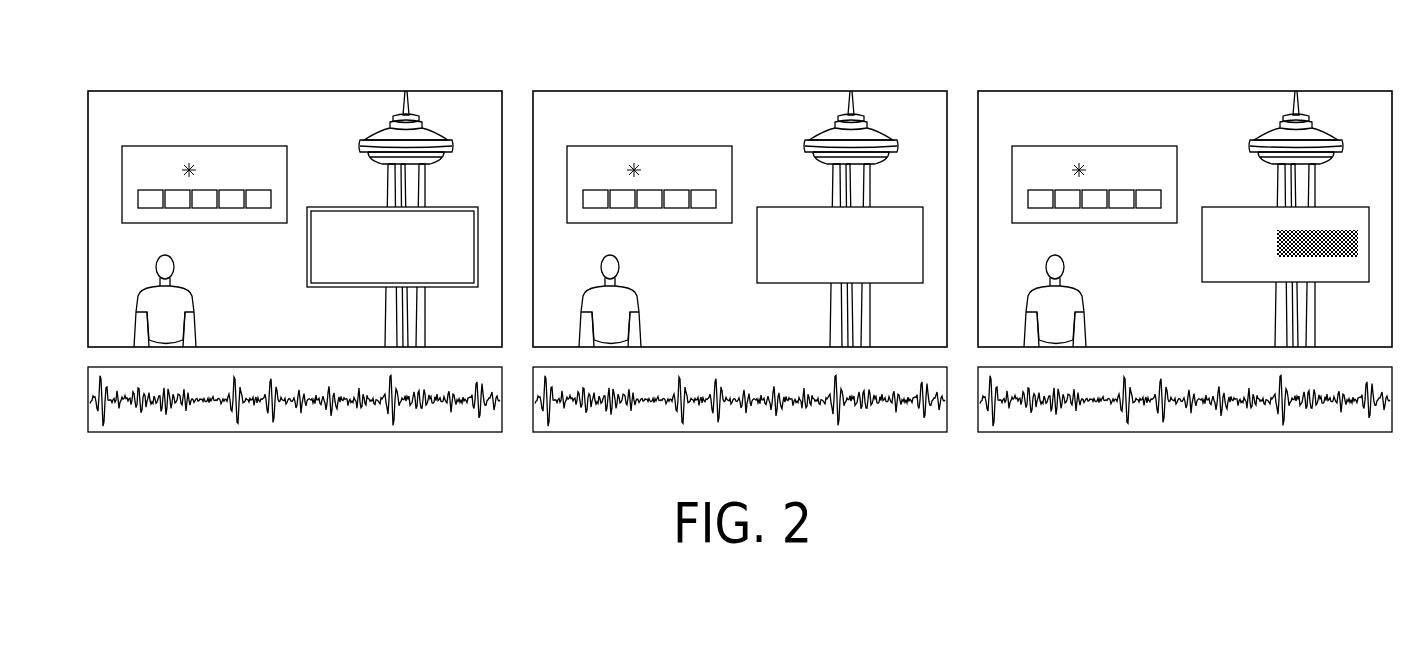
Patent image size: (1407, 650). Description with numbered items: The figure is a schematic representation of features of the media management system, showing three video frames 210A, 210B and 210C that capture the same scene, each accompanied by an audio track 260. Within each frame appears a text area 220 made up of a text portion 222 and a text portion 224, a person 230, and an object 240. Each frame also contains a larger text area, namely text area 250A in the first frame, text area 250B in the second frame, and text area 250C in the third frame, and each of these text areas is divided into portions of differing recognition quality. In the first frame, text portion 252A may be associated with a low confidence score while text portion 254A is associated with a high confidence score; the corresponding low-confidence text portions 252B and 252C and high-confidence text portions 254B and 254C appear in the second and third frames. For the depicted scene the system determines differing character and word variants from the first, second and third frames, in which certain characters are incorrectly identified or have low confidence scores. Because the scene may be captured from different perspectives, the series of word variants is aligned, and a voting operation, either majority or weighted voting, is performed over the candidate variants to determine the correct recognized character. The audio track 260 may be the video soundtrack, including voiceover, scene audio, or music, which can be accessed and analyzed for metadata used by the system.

The frame 210A is at (125, 90).
The frame 210B is at (590, 90).
The frame 210C is at (1025, 90).
The text area 220 is at (288, 176).
The text portion 222 is at (136, 168).
The text portion 224 is at (128, 203).
The person 230 is at (177, 262).
The object 240 is at (410, 105).
The text area 250A is at (359, 260).
The text area 250B is at (809, 260).
The text area 250C is at (1247, 262).
The text portion 252A is at (357, 258).
The text portion 252B is at (783, 258).
The text portion 252C is at (1338, 258).
The text portion 254A is at (457, 258).
The text portion 254B is at (905, 258).
The text portion 254C is at (1233, 258).
The audio track 260 is at (88, 401).